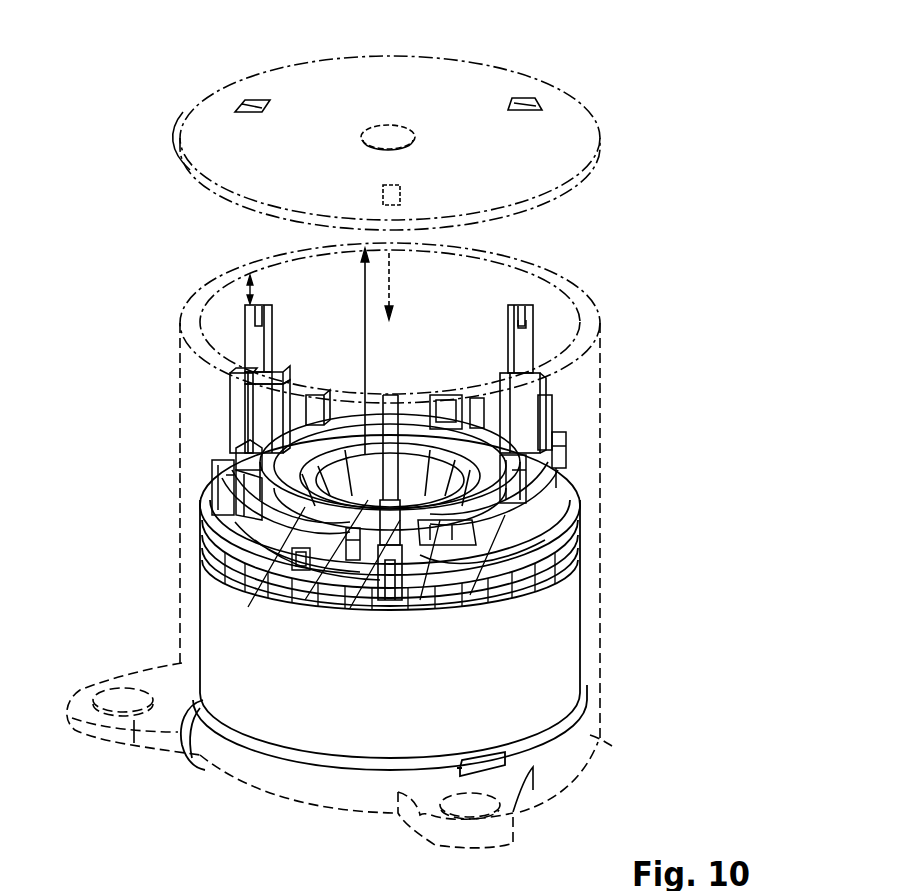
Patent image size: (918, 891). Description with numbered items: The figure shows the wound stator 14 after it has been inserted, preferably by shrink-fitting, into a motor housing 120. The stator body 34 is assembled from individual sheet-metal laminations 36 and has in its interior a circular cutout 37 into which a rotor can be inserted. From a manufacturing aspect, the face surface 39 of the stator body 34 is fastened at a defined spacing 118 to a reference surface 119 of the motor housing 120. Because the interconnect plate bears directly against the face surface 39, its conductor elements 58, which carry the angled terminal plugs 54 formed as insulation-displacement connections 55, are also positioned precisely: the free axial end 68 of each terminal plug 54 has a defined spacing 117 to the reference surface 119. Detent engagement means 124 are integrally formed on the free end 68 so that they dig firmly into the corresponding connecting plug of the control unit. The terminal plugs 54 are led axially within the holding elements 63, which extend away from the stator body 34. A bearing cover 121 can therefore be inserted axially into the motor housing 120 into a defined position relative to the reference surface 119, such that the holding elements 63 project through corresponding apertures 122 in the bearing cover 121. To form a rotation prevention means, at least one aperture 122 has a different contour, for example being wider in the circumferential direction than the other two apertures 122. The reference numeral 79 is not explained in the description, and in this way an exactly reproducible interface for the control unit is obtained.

The bearing cover 121 is at (200, 116).
The apertures 122 is at (252, 103).
The reference surface 119 is at (538, 250).
The motor housing 120 is at (600, 490).
The defined spacing 118 is at (365, 352).
The defined spacing 117 is at (245, 290).
The stator body 34 is at (390, 545).
The sheet-metal laminations 36 is at (327, 560).
The stator 14 is at (300, 560).
The face surface 39 is at (352, 560).
The circular cutout 37 is at (517, 477).
The conductor elements 58 is at (218, 490).
The holding elements 63 is at (237, 400).
The free axial end 68 is at (240, 375).
The terminal plugs 54 is at (203, 373).
The insulation-displacement connections 55 is at (255, 342).
The detent engagement means 124 is at (533, 333).
The slot 79 is at (606, 328).